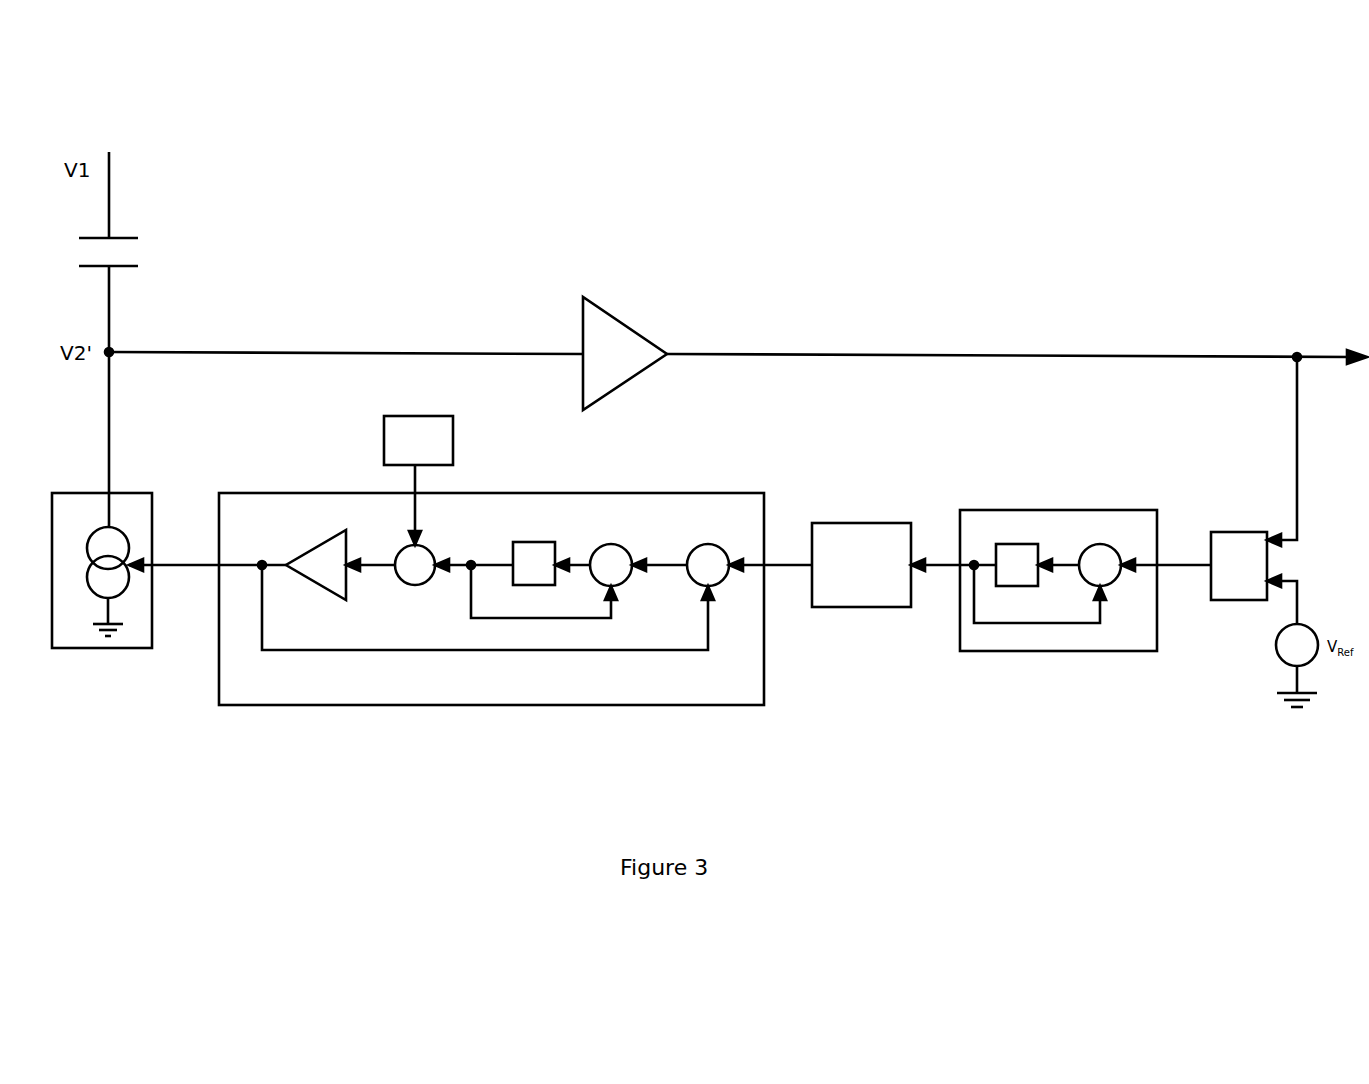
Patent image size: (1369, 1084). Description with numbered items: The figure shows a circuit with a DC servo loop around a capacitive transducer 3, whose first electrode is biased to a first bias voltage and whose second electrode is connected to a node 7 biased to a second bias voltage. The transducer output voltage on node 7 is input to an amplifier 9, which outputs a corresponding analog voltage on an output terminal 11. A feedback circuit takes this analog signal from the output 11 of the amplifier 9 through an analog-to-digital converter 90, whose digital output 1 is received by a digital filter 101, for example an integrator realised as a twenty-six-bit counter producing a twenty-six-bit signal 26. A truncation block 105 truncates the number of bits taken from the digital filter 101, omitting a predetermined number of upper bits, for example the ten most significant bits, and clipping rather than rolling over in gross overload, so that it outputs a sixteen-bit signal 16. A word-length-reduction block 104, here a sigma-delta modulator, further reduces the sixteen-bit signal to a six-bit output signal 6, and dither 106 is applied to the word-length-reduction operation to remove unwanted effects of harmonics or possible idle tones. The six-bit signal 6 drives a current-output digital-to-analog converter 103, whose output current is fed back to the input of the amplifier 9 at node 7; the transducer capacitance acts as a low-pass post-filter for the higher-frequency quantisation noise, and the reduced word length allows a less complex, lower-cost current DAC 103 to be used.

The ADC output signal 1 is at (1173, 582).
The capacitive transducer 3 is at (140, 252).
The six-bit output signal 6 is at (181, 580).
The node 7 is at (220, 364).
The amplifier 9 is at (618, 315).
The output terminal 11 is at (1132, 351).
The sixteen-bit signal 16 is at (783, 583).
The twenty-six-bit counter output 26 is at (931, 582).
The analog-to-digital converter 90 is at (1238, 608).
The digital filter 101 is at (1017, 652).
The current-output digital-to-analog converter 103 is at (118, 655).
The word-length-reduction block 104 is at (477, 708).
The truncation block 105 is at (860, 540).
The dither 106 is at (455, 433).